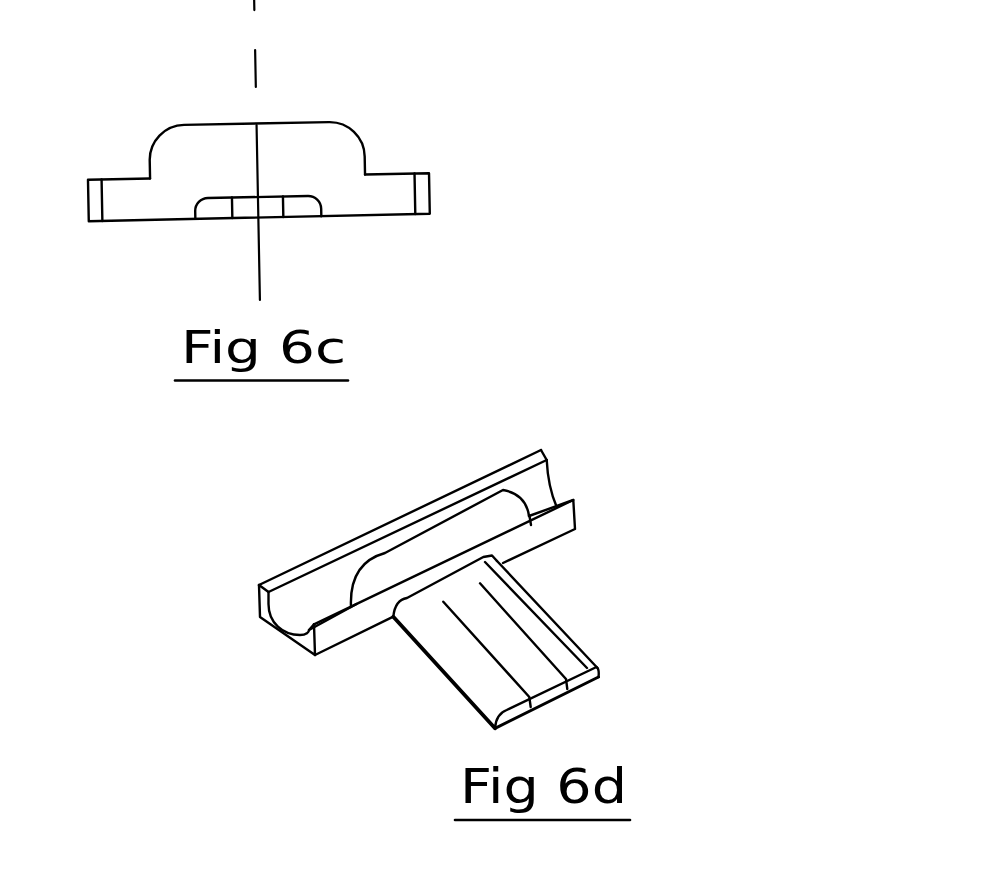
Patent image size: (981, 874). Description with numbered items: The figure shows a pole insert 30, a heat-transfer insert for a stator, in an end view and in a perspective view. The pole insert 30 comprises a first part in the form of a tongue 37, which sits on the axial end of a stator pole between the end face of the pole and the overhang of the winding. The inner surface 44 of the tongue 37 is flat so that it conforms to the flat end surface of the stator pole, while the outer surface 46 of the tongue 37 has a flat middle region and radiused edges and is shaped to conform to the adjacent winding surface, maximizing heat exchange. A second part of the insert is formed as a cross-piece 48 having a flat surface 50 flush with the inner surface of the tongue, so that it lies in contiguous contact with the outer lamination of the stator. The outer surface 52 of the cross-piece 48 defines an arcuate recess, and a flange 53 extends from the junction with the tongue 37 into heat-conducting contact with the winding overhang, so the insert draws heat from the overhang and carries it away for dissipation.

In FIG. 6D, the pole insert 30 is at (521, 563).
In FIG. 6D, the tongue 37 is at (473, 674).
In FIG. 6C, the inner surface 44 is at (218, 220).
In FIG. 6C, the outer surface 46 is at (223, 196).
In FIG. 6D, the cross-piece 48 is at (477, 481).
In FIG. 6C, the flat surface 50 is at (110, 223).
In FIG. 6D, the outer surface 52 is at (308, 595).
In FIG. 6C, the flange 53 is at (276, 137).
In FIG. 6D, the flange 53 is at (445, 545).